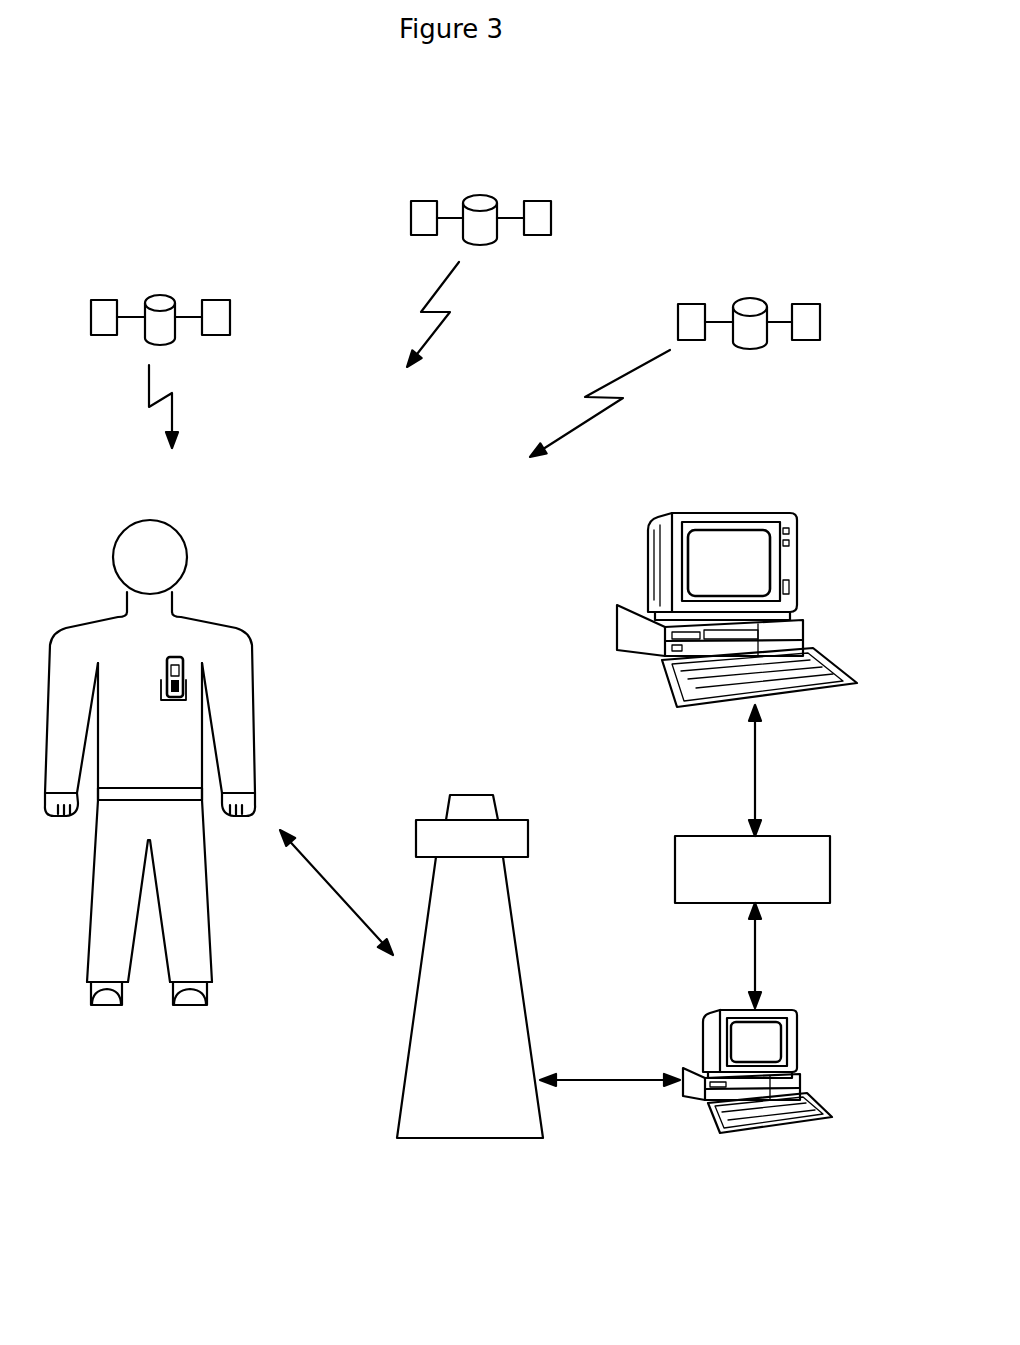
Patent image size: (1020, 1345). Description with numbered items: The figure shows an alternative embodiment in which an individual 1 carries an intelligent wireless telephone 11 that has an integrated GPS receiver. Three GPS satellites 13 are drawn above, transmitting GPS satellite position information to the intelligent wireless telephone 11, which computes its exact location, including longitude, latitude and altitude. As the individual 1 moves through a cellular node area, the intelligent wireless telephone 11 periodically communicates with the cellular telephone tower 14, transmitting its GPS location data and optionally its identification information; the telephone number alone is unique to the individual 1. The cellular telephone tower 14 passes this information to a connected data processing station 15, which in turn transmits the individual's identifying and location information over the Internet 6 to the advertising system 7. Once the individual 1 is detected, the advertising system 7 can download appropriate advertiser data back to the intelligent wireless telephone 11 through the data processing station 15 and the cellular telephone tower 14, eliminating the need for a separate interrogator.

The individual 1 is at (108, 627).
The intelligent wireless telephone 11 is at (177, 657).
The GPS satellites 13 is at (468, 201).
The cellular telephone tower 14 is at (476, 805).
The advertising system 7 is at (647, 545).
The Internet 6 is at (693, 845).
The data processing station 15 is at (703, 1045).